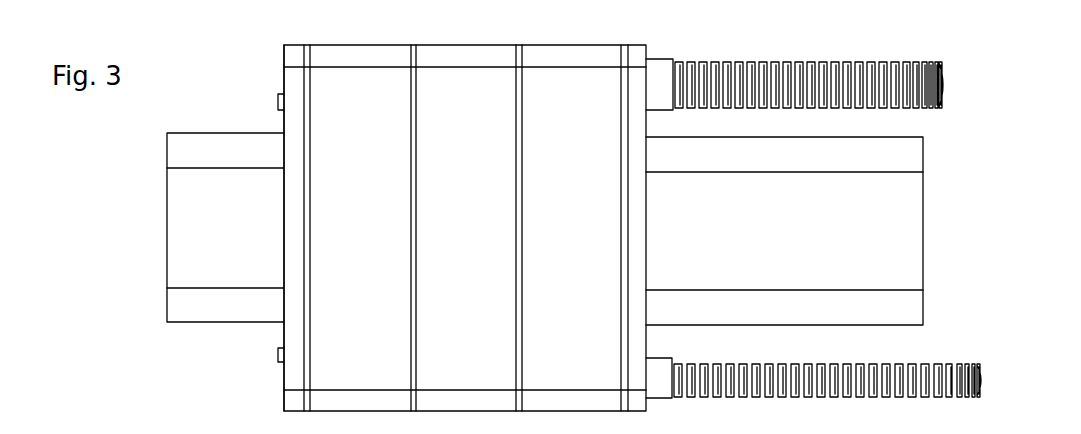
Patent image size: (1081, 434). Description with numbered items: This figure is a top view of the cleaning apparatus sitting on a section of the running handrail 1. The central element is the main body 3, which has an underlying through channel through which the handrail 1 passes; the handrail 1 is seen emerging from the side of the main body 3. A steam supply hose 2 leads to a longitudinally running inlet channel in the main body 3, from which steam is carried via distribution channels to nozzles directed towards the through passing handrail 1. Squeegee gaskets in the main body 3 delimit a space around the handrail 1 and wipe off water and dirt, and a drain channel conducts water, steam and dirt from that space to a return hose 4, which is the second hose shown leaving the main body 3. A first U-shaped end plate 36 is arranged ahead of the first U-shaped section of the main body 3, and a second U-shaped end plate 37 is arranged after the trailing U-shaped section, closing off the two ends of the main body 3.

The handrail 1 is at (913, 162).
The steam supply hose 2 is at (952, 368).
The main body 3 is at (547, 38).
The return hose 4 is at (922, 63).
The first U-shaped end plate 36 is at (636, 53).
The second U-shaped end plate 37 is at (285, 57).